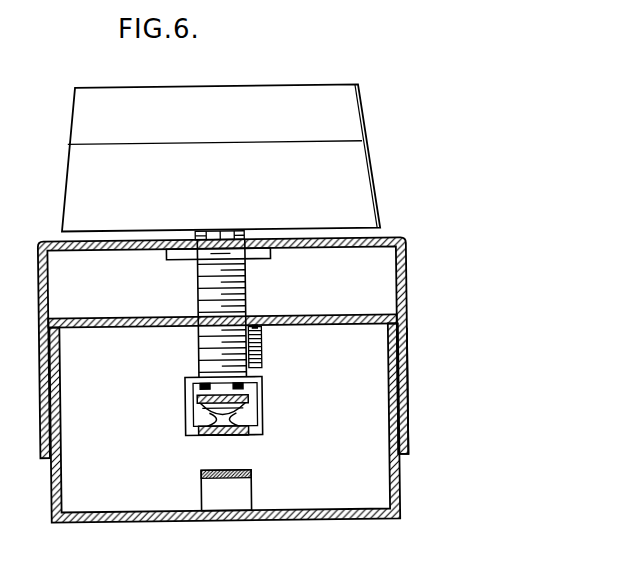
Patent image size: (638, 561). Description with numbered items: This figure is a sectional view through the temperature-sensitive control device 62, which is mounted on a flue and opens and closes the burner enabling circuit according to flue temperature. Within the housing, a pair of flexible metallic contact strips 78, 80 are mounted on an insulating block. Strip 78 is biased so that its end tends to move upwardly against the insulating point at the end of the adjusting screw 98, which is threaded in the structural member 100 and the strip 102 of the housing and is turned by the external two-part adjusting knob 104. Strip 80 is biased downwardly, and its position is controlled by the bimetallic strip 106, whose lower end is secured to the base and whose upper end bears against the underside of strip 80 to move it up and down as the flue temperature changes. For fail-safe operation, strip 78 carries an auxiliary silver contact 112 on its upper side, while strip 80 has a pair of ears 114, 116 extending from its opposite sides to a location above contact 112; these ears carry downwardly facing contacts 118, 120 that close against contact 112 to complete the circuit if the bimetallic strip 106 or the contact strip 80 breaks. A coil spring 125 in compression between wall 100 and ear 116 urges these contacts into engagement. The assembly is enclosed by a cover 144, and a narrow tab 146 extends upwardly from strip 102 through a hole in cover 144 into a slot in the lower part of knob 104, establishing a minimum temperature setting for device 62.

The temperature-sensitive control device 62 is at (409, 282).
The flexible metallic contact strip 78 is at (262, 400).
The flexible metallic contact strip 80 is at (204, 435).
The adjusting screw 98 is at (200, 276).
The structural member 100 is at (345, 316).
The strip 102 is at (258, 259).
The adjusting knob 104 is at (380, 144).
The bimetallic strip 106 is at (240, 487).
The auxiliary silver contact 112 is at (202, 404).
The ear 114 is at (200, 410).
The ear 116 is at (262, 421).
The downwardly facing contact 118 is at (199, 383).
The downwardly facing contact 120 is at (262, 383).
The spring 125 is at (263, 345).
The cover 144 is at (409, 362).
The tab 146 is at (224, 232).